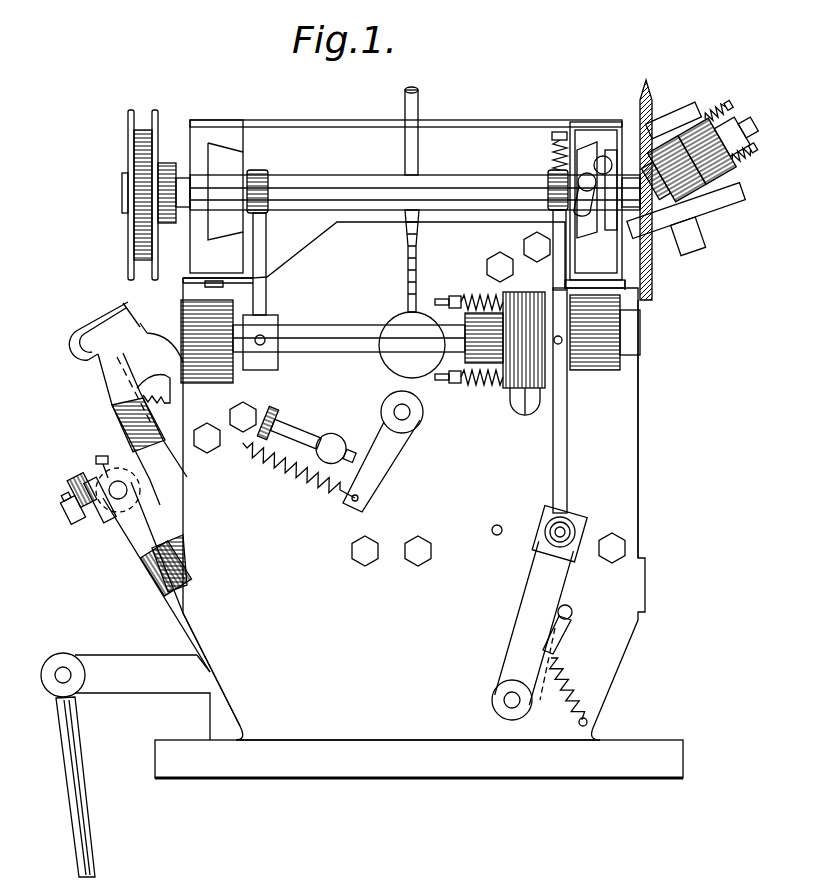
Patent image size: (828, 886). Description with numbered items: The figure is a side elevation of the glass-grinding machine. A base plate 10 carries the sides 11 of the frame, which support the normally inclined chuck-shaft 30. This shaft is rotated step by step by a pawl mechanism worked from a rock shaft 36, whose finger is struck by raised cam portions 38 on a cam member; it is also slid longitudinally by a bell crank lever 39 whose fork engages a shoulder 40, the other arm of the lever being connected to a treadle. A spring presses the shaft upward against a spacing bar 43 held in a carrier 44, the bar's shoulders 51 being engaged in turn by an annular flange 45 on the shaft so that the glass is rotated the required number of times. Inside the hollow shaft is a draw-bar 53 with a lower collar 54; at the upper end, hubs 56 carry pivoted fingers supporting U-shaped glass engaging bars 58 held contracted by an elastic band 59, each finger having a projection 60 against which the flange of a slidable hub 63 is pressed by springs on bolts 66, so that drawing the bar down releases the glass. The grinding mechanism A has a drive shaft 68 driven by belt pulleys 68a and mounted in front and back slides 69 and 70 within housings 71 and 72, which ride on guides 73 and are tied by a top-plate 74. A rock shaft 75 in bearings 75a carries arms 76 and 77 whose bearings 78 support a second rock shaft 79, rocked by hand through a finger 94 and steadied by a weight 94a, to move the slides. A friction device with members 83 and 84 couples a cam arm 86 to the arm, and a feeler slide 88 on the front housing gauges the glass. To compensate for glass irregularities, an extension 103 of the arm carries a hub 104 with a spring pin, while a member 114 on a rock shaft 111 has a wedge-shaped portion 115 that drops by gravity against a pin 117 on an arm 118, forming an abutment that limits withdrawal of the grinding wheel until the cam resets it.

The base plate 10 is at (419, 759).
The sides 11 is at (626, 468).
The chuck-shaft 30 is at (185, 470).
The rock shaft 36 is at (410, 412).
The raised peripheral cam portions 38 is at (148, 660).
The bell crank lever 39 is at (138, 540).
The shoulder 40 is at (112, 462).
The spacing bar 43 is at (120, 318).
The carrier 44 is at (105, 378).
The annular flange 45 is at (118, 416).
The shoulders 51 is at (161, 403).
The draw-bar 53 is at (70, 524).
The collar 54 is at (75, 482).
The hubs 56 is at (723, 142).
The glass engaging bars 58 is at (676, 112).
The elastic band 59 is at (680, 240).
The projection 60 is at (710, 116).
The slidable hub 63 is at (671, 172).
The bolts 66 is at (730, 110).
The drive shaft 68 is at (182, 160).
The belt pulleys 68a is at (126, 150).
The front slide 69 is at (588, 152).
The back slide 70 is at (225, 191).
The front housing 71 is at (592, 126).
The back housing 72 is at (214, 125).
The guides 73 is at (183, 278).
The top-plate 74 is at (346, 120).
The rock shaft 75 is at (326, 325).
The bearings 75a is at (214, 372).
The arm 76 is at (553, 275).
The arm 77 is at (262, 250).
The bearings 78 is at (260, 170).
The second rock shaft 79 is at (330, 175).
The friction device member 83 is at (510, 388).
The friction device member 84 is at (562, 352).
The cam arm 86 is at (522, 410).
The feeler slide 88 is at (614, 222).
The finger 94 is at (418, 132).
The weight 94a is at (392, 362).
The extension 103 is at (553, 460).
The hub 104 is at (578, 522).
The rock shaft 111 is at (492, 700).
The member 114 is at (524, 590).
The wedge-shaped portion 115 is at (572, 548).
The pin 117 is at (574, 612).
The arm 118 is at (566, 640).
The grinding mechanism A is at (647, 80).